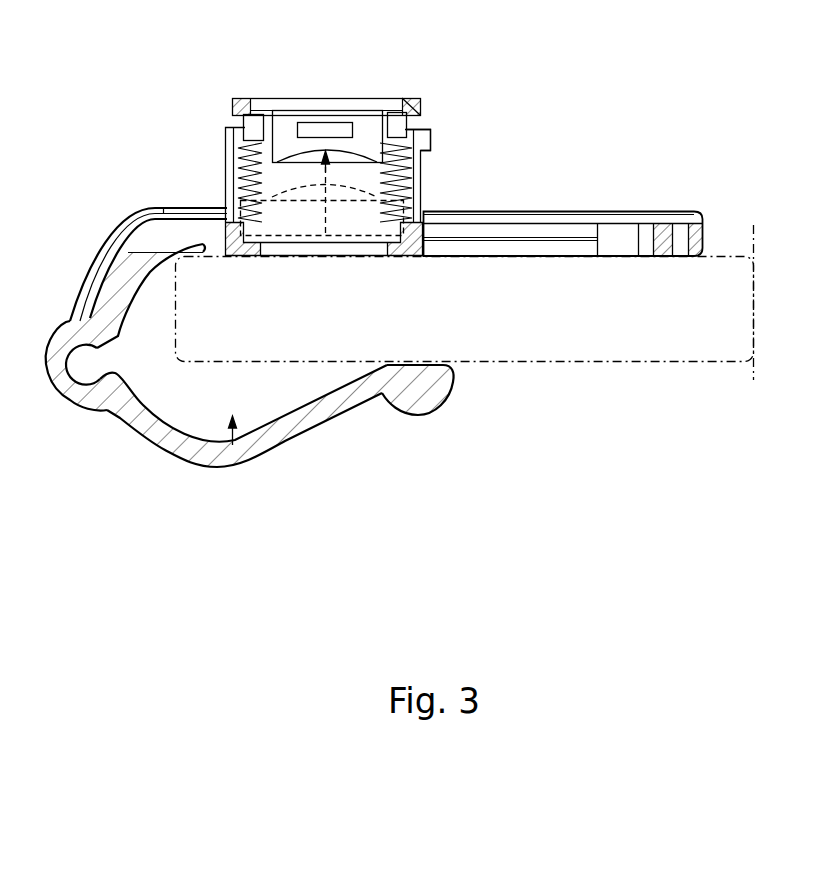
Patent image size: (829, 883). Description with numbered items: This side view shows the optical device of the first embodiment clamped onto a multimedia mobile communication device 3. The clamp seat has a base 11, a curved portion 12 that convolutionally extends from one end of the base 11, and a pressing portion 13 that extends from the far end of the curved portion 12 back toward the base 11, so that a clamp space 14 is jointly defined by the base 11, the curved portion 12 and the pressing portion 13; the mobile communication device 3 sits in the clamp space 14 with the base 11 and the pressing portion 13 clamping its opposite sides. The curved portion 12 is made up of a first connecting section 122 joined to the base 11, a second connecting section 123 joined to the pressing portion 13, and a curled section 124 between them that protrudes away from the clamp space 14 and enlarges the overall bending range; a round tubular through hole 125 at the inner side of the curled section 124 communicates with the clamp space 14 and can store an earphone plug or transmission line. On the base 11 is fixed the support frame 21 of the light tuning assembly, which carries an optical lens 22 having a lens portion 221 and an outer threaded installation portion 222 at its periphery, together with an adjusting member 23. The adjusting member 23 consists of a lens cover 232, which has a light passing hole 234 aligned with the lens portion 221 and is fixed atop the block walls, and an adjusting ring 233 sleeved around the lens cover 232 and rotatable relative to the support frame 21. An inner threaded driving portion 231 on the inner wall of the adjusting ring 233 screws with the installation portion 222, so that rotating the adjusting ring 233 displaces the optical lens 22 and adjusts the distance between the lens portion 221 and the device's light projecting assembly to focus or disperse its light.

The multimedia mobile communication device 3 is at (534, 368).
The base 11 is at (563, 189).
The support frame 21 is at (436, 219).
The curved portion 12 is at (250, 359).
The first connecting section 122 is at (128, 250).
The second connecting section 123 is at (172, 452).
The curled section 124 is at (50, 340).
The through hole 125 is at (84, 377).
The pressing portion 13 is at (322, 430).
The clamp space 14 is at (236, 452).
The optical lens 22 is at (503, 52).
The lens portion 221 is at (421, 101).
The installation portion 222 is at (431, 143).
The adjusting member 23 is at (177, 42).
The driving portion 231 is at (226, 192).
The lens cover 232 is at (234, 110).
The adjusting ring 233 is at (210, 140).
The light passing hole 234 is at (270, 112).